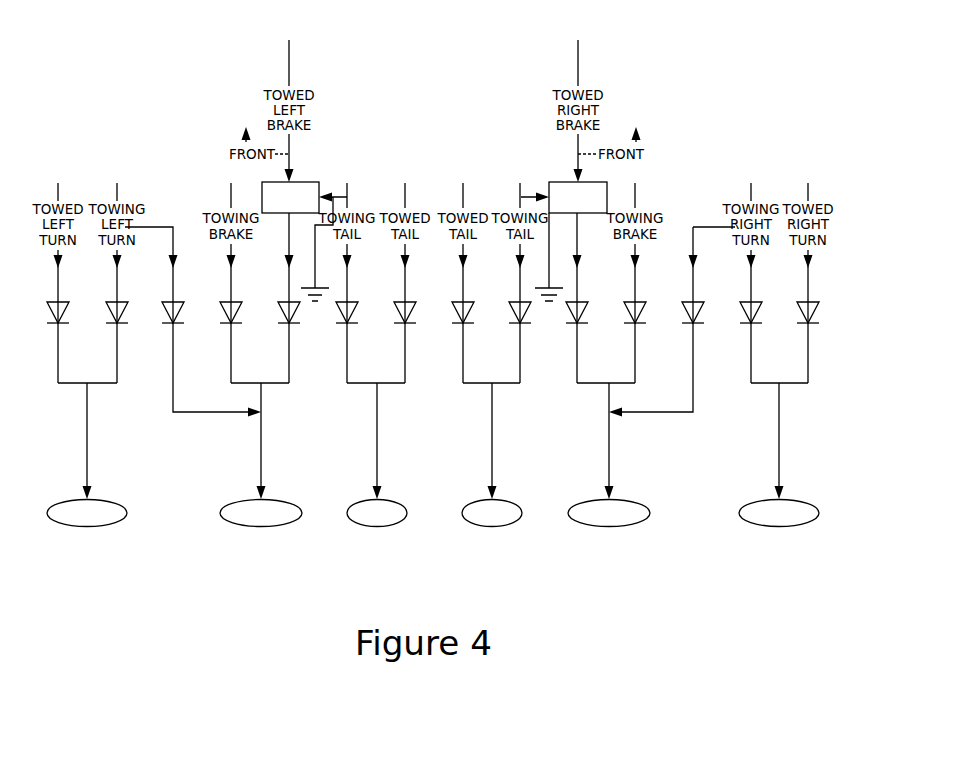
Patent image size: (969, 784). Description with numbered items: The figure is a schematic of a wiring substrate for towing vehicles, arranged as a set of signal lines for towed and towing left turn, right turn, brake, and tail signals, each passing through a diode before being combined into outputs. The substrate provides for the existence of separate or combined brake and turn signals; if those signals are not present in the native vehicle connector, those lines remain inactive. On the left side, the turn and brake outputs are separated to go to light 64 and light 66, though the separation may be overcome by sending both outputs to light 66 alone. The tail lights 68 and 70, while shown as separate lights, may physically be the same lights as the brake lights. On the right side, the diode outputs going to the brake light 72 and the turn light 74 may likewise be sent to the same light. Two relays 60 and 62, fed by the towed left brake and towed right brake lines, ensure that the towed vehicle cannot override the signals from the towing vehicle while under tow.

The relay 60 is at (319, 182).
The relay 62 is at (607, 182).
The left turn light 64 is at (106, 525).
The left brake light 66 is at (258, 526).
The tail light 68 is at (374, 526).
The tail light 70 is at (508, 527).
The brake light 72 is at (628, 527).
The turn light 74 is at (780, 527).